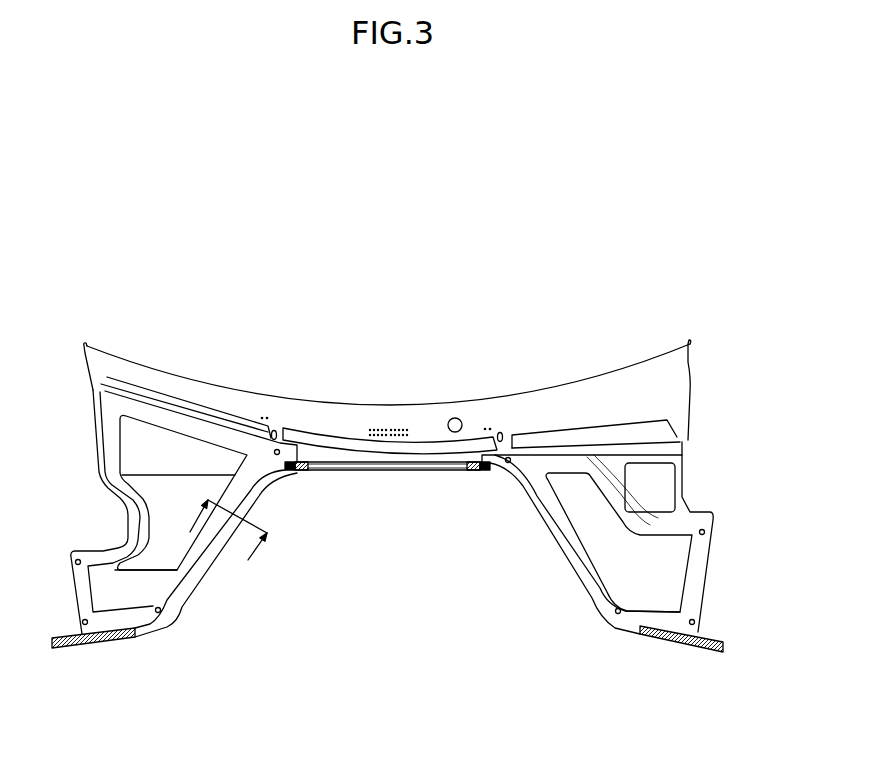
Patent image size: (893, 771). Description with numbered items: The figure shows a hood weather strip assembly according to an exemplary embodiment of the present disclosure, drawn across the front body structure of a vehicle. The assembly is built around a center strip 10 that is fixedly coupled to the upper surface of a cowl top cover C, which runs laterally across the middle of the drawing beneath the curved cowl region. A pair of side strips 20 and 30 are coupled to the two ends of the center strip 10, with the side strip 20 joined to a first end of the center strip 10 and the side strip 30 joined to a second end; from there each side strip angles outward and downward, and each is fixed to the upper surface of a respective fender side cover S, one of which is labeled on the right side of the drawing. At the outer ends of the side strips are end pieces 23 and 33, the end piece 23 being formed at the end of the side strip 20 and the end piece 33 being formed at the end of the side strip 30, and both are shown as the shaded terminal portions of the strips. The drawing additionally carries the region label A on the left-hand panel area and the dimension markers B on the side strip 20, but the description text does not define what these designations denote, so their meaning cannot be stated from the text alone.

The center strip 10 is at (410, 467).
The side strip 20 is at (197, 592).
The end piece 23 is at (93, 643).
The side strip 30 is at (556, 547).
The end piece 33 is at (680, 640).
The dash panel opening region A is at (133, 452).
The pillar member width B is at (221, 543).
The cowl top cover C is at (337, 442).
The fender side cover S is at (673, 570).